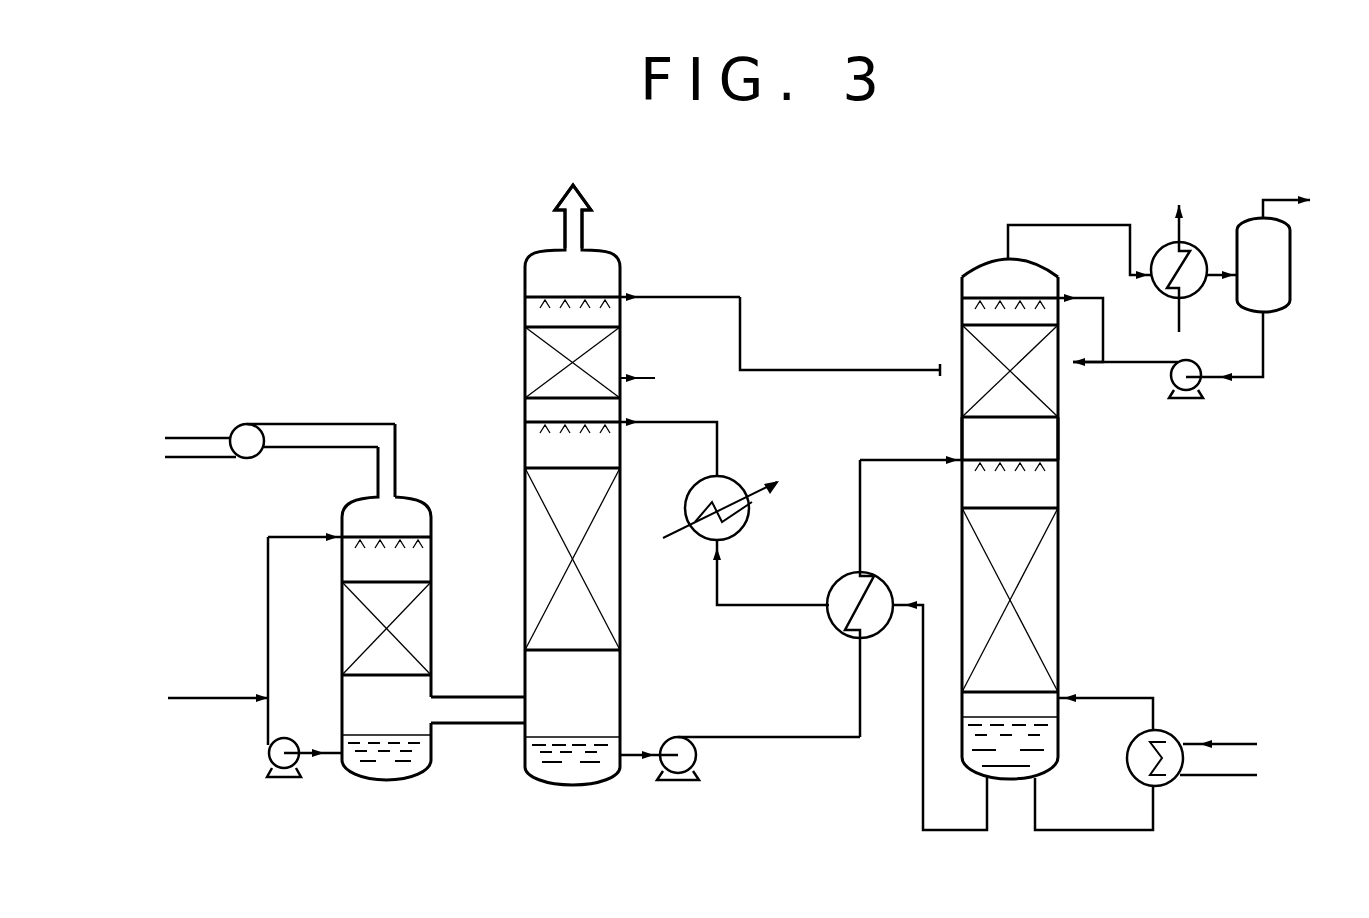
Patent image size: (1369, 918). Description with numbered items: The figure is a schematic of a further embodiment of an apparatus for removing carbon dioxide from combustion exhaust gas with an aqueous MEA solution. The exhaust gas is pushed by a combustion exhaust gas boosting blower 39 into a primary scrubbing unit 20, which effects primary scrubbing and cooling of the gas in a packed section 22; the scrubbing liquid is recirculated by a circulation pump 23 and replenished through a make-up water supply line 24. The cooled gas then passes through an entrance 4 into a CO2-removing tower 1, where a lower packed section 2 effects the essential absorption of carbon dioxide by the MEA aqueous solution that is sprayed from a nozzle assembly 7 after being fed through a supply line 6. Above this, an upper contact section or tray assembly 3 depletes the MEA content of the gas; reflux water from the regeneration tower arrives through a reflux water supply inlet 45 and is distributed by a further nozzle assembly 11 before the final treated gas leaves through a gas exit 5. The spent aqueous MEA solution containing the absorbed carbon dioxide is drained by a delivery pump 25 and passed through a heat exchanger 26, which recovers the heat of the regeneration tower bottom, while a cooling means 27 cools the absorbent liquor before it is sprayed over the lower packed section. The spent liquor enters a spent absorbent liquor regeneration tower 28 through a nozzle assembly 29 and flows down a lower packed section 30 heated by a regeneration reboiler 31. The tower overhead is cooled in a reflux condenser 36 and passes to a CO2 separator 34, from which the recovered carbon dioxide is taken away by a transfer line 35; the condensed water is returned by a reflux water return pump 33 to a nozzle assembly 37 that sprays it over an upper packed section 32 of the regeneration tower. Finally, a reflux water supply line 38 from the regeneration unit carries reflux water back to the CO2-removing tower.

The CO2-removing tower 1 is at (647, 376).
The lower packed section 2 is at (618, 590).
The upper contact section or tray assembly 3 is at (612, 338).
The entrance 4 is at (500, 713).
The gas exit 5 is at (588, 200).
The supply line 6 is at (622, 425).
The nozzle assembly 7 is at (542, 423).
The further nozzle assembly 11 is at (532, 292).
The primary scrubbing unit 20 is at (417, 497).
The packed section 22 is at (410, 635).
The circulation pump 23 is at (267, 760).
The make-up water supply line 24 is at (220, 703).
The delivery pump 25 is at (682, 780).
The heat exchanger 26 is at (890, 582).
The cooling means 27 is at (752, 522).
The spent absorbent liquor regeneration tower 28 is at (1060, 440).
The nozzle assembly 29 is at (1043, 468).
The lower packed section 30 is at (1045, 597).
The regeneration reboiler 31 is at (1170, 783).
The upper packed section 32 is at (1042, 385).
The reflux water return pump 33 is at (1202, 393).
The CO2 separator 34 is at (1290, 303).
The transfer line 35 is at (1282, 200).
The reflux condenser 36 is at (1198, 242).
The nozzle assembly 37 is at (988, 295).
The reflux water supply line 38 is at (798, 365).
The combustion exhaust gas boosting blower 39 is at (245, 425).
The reflux water supply inlet 45 is at (622, 292).